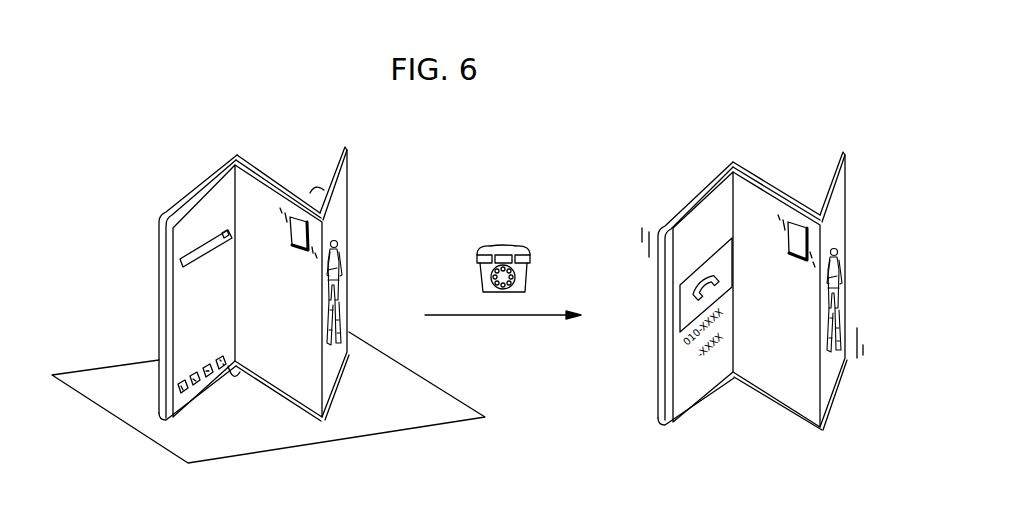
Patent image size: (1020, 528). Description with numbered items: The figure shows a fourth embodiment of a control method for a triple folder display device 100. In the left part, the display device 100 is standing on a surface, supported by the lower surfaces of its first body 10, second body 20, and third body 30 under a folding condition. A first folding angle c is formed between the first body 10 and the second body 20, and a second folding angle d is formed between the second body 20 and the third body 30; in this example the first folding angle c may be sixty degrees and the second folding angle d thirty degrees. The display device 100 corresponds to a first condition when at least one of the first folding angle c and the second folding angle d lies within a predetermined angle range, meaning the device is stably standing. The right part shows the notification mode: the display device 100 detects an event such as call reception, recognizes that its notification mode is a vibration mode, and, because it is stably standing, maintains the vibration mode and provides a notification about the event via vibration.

The display device 100 is at (160, 279).
The first body 10 is at (189, 200).
The second body 20 is at (272, 185).
The third body 30 is at (345, 170).
The first folding angle c is at (234, 381).
The second folding angle d is at (316, 183).